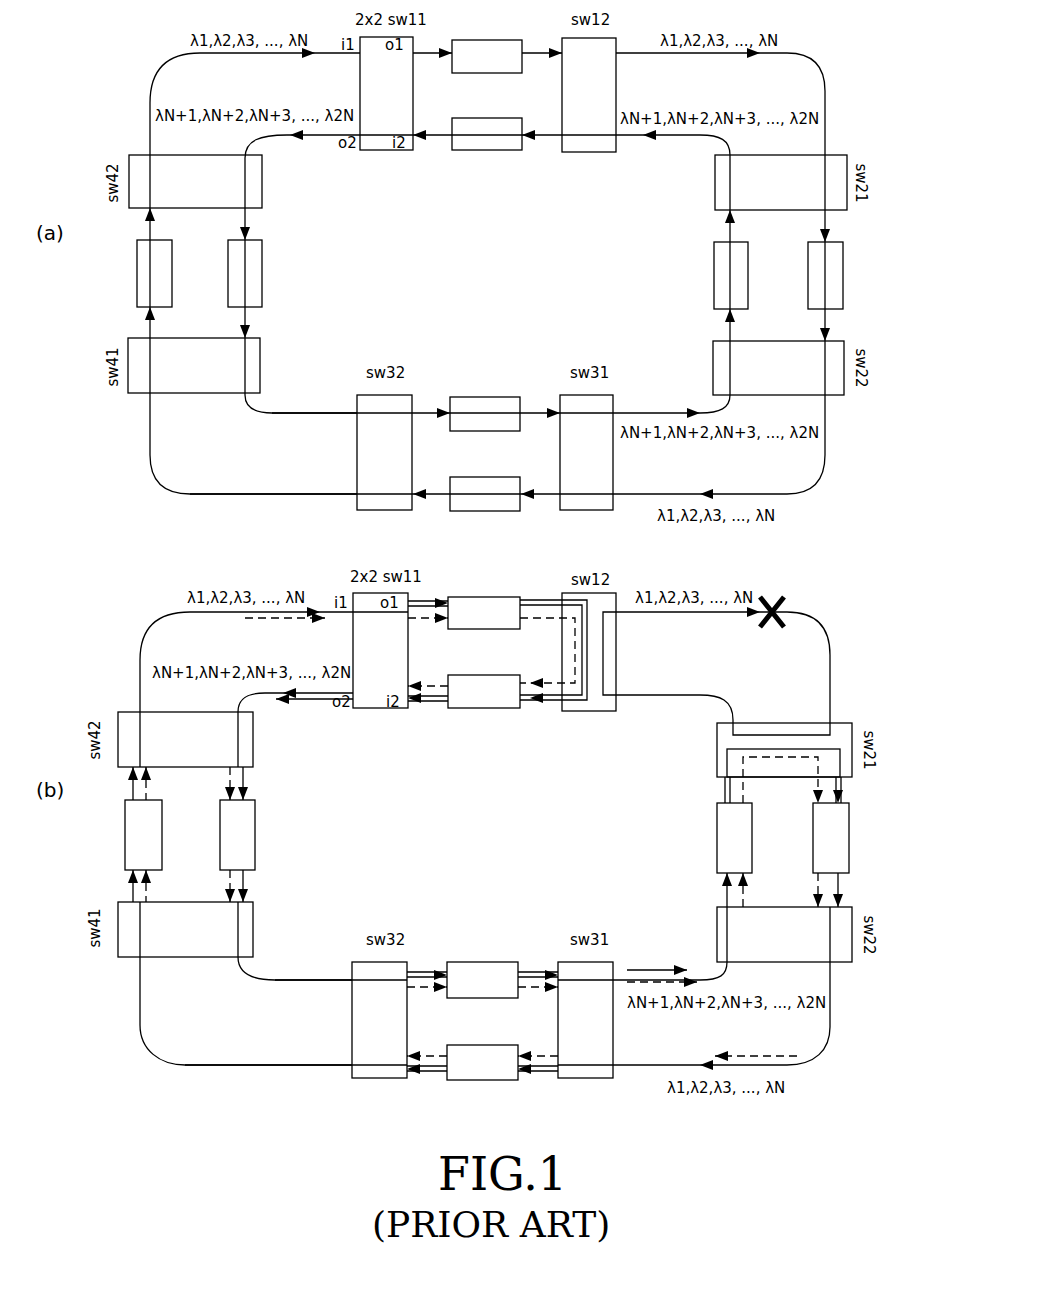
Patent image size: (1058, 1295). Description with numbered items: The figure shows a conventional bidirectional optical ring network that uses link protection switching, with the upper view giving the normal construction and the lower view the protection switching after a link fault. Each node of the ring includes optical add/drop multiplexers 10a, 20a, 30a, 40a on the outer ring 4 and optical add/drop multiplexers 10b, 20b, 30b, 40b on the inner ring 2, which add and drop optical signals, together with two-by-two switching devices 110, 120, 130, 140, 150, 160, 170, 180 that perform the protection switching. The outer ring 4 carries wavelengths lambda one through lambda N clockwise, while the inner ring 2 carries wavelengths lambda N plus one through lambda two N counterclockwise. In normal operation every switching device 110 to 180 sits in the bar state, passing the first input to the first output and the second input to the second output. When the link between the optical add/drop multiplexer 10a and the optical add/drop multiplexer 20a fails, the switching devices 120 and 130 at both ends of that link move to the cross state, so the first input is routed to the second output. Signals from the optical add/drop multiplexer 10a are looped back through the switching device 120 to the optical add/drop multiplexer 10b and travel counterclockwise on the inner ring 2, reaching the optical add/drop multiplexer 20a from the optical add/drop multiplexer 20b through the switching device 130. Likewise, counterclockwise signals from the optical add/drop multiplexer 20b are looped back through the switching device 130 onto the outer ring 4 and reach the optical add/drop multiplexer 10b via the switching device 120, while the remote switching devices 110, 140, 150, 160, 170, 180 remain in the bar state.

The inner ring 2 is at (314, 413).
The outer ring 4 is at (257, 494).
The optical add/drop multiplexer 10a is at (482, 39).
The optical add/drop multiplexer 10b is at (480, 151).
The optical add/drop multiplexer 20a is at (807, 277).
The optical add/drop multiplexer 20b is at (713, 277).
The optical add/drop multiplexer 30a is at (474, 512).
The optical add/drop multiplexer 30b is at (476, 396).
The optical add/drop multiplexer 40a is at (136, 271).
The optical add/drop multiplexer 40b is at (263, 278).
The 2×2 switching device 110 is at (378, 151).
The 2×2 switching device 120 is at (578, 153).
The 2×2 switching device 130 is at (714, 181).
The 2×2 switching device 140 is at (712, 365).
The 2×2 switching device 150 is at (584, 511).
The 2×2 switching device 160 is at (380, 511).
The 2×2 switching device 170 is at (261, 355).
The 2×2 switching device 180 is at (263, 188).